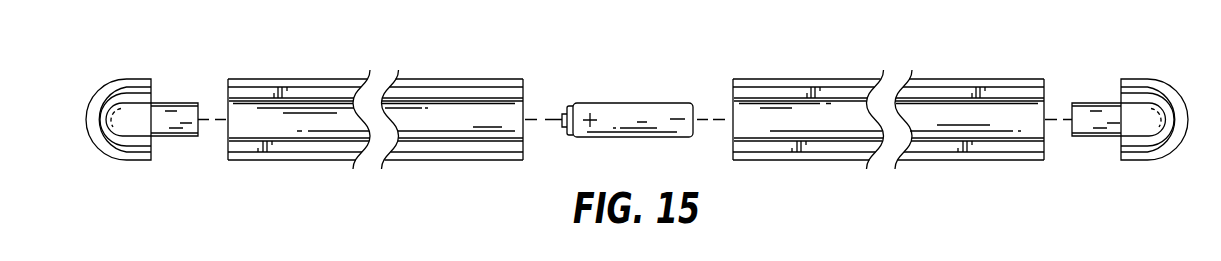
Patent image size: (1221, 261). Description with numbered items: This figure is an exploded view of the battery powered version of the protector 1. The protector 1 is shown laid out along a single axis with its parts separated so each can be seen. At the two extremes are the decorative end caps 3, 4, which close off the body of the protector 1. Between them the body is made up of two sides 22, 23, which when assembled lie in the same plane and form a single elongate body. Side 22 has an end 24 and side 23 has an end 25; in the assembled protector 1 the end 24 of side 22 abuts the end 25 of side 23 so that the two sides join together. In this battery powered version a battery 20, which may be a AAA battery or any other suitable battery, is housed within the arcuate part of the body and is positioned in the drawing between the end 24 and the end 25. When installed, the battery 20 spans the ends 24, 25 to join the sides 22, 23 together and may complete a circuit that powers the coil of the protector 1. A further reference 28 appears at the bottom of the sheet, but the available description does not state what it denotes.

The protector 1 is at (195, 217).
The decorative end cap 3 is at (127, 113).
The decorative end cap 4 is at (1145, 112).
The battery 20 is at (633, 112).
The side 22 is at (442, 113).
The side 23 is at (850, 113).
The end 24 is at (524, 106).
The end 25 is at (733, 103).
The connector 28 is at (552, 256).